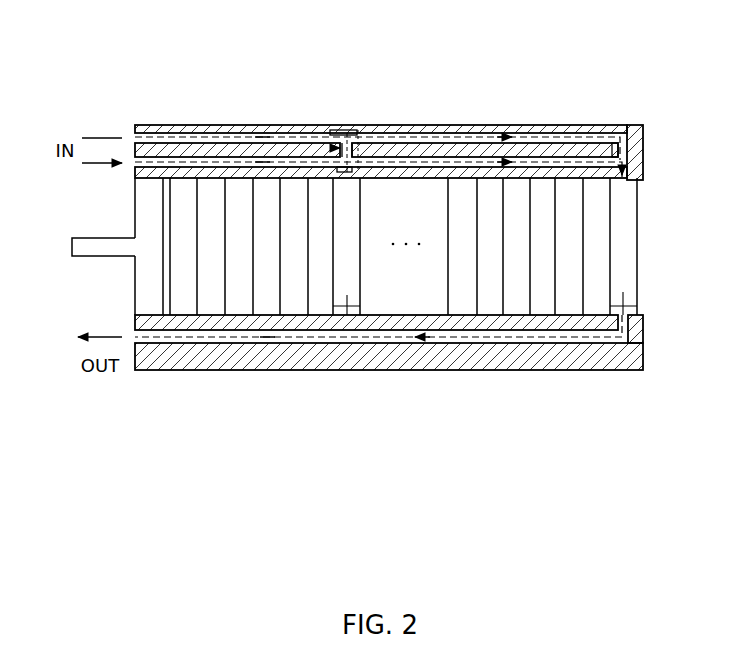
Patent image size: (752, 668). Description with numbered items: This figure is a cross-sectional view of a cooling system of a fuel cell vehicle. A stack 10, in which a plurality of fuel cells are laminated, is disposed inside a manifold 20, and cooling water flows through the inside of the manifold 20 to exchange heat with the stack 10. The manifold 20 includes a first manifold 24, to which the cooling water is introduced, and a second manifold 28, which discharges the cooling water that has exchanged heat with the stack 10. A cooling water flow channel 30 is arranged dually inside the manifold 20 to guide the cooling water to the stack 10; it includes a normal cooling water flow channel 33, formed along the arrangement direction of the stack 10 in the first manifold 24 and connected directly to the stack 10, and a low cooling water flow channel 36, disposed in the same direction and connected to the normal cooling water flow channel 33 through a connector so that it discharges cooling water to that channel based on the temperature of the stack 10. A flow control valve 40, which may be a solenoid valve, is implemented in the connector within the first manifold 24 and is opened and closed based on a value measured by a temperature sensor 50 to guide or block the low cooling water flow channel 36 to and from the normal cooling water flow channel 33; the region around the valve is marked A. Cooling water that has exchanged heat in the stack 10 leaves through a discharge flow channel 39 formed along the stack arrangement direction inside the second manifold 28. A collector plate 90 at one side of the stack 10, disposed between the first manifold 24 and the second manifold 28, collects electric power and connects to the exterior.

The stack 10 is at (347, 298).
The manifold 20 is at (636, 110).
The first manifold 24 is at (644, 151).
The second manifold 28 is at (644, 341).
The cooling water flow channel 30 is at (430, 47).
The normal cooling water flow channel 33 is at (495, 160).
The low cooling water flow channel 36 is at (445, 135).
The discharge flow channel 39 is at (397, 339).
The flow control valve 40 is at (331, 130).
The temperature sensor 50 is at (352, 313).
The collector plate 90 is at (97, 243).
The region A is at (355, 131).